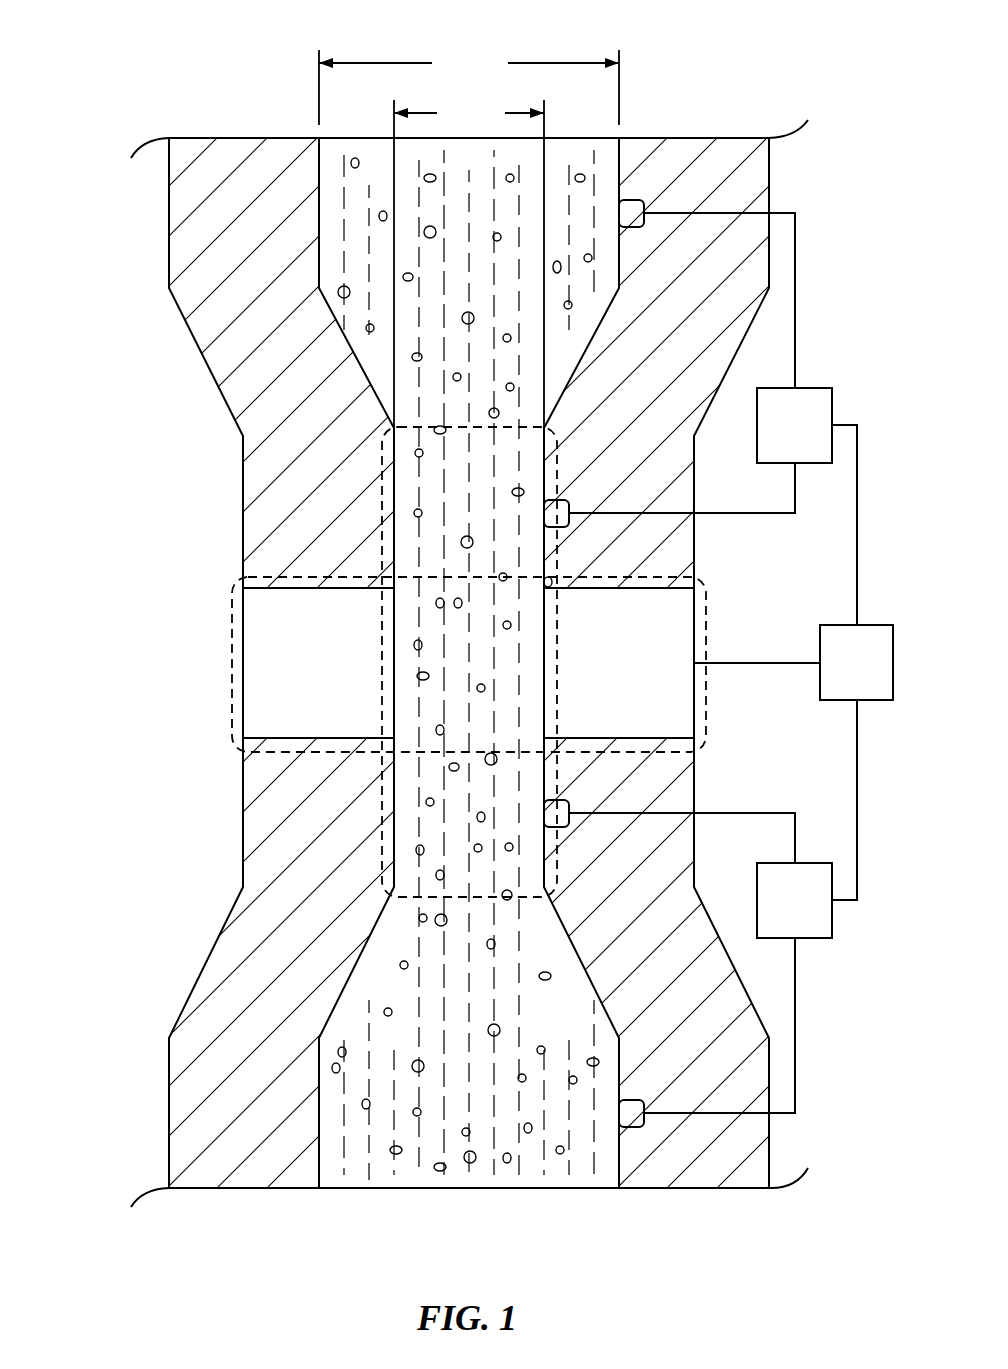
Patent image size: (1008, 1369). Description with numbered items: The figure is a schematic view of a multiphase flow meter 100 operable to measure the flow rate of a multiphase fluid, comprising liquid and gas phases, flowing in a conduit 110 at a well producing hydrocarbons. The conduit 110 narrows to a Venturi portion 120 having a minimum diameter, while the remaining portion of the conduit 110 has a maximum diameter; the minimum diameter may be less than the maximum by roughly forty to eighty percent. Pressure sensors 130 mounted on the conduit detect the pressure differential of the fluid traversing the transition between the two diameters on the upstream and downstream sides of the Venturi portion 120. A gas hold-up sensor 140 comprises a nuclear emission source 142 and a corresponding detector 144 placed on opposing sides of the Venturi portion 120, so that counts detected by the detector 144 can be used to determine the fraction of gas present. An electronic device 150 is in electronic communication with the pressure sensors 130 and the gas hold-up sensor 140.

The multiphase flow meter 100 is at (84, 83).
The conduit 110 is at (169, 212).
The Venturi portion 120 is at (382, 508).
The pressure sensors 130 is at (818, 441).
The gas hold-up sensor 140 is at (232, 625).
The nuclear emission source 142 is at (243, 700).
The detector 144 is at (706, 627).
The electronic device 150 is at (880, 678).